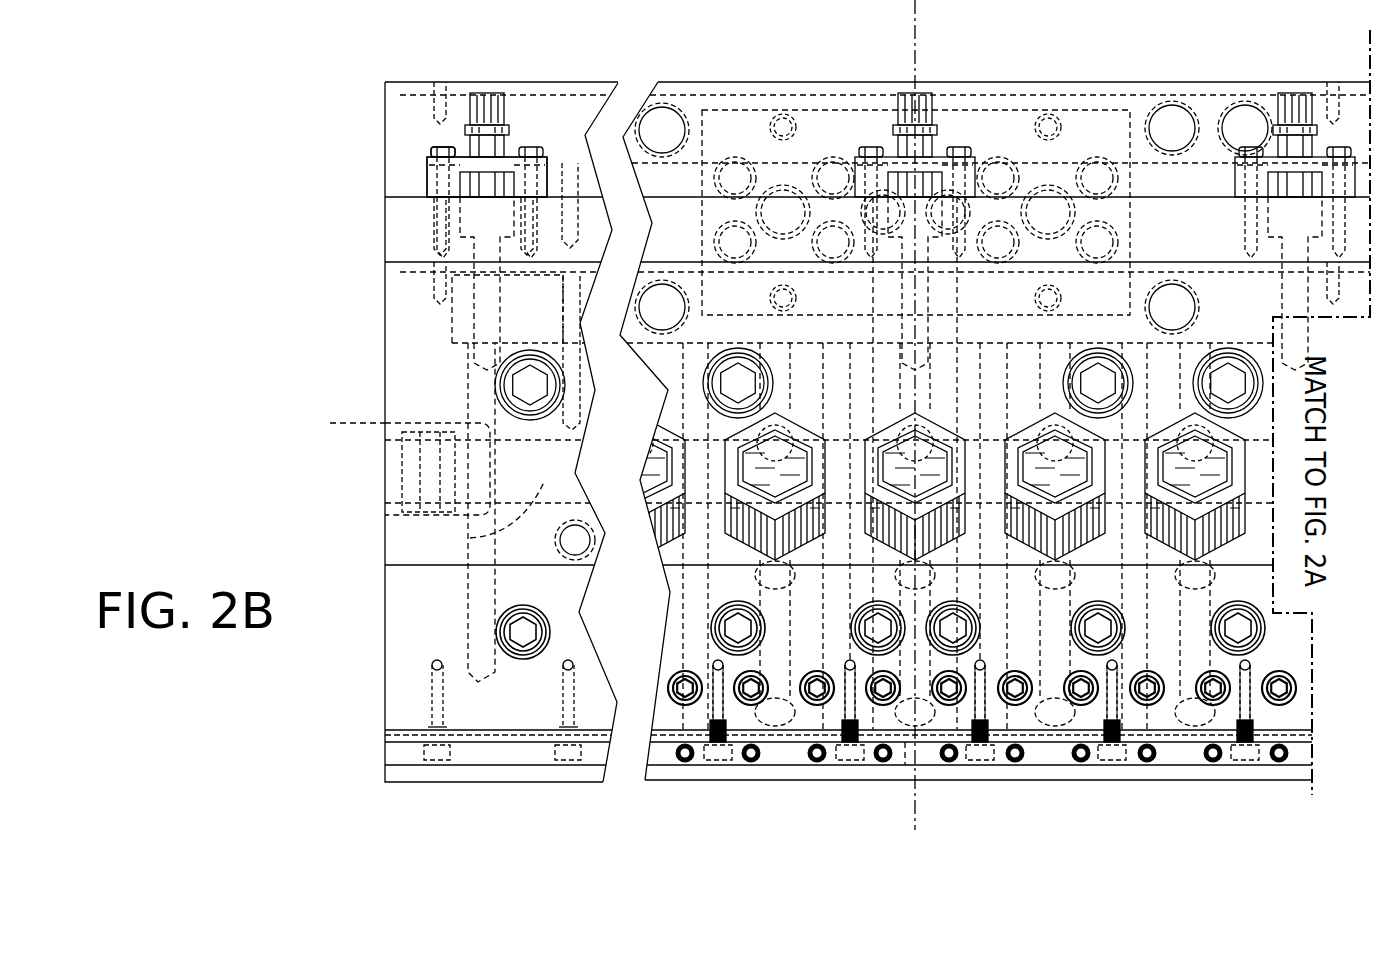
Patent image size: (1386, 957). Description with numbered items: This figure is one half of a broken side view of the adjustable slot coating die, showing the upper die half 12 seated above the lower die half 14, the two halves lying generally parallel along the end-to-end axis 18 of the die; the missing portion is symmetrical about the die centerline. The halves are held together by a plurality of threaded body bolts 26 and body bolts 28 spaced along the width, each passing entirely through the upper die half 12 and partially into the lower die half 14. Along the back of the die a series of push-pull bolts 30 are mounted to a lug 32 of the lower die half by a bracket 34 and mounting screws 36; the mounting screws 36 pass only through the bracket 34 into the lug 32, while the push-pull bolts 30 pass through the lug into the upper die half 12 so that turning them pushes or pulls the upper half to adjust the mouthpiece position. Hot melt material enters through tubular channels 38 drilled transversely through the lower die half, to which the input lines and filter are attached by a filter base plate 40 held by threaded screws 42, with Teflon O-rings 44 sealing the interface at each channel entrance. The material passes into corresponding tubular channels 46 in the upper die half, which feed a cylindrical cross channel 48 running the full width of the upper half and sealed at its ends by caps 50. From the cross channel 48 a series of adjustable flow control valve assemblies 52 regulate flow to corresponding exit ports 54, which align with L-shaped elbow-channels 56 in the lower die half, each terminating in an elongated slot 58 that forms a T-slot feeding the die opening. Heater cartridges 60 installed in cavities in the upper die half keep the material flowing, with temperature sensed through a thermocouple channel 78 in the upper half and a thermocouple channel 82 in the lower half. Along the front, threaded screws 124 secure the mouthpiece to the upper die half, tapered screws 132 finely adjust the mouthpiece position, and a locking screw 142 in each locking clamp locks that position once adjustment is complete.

The lower die half 14 is at (400, 95).
The push-pull bolts 30 is at (490, 92).
The thermocouple channel 82 is at (572, 165).
The threaded screws 42 is at (662, 306).
The Teflon O-rings 44 is at (783, 212).
The tubular channels 38 is at (883, 190).
The filter base plate 40 is at (978, 100).
The mounting screws 36 is at (435, 148).
The bracket 34 is at (428, 178).
The lug 32 is at (400, 222).
The upper die half 12 is at (400, 330).
The threaded body bolts 26 is at (530, 392).
The thermocouple channel 78 is at (572, 345).
The end-to-end axis 18 is at (366, 423).
The caps 50 is at (405, 468).
The cross channel 48 is at (470, 538).
The threaded body bolts 28 is at (512, 620).
The heater cartridges 60 is at (445, 668).
The tubular channels 46 is at (685, 765).
The exit port 54 is at (752, 765).
The elbow-channels 56 is at (800, 692).
The elongated slot 58 is at (912, 770).
The threaded screws 124 is at (985, 770).
The locking screw 142 is at (1018, 706).
The tapered screws 132 is at (1025, 758).
The flow control valve assemblies 52 is at (1170, 560).